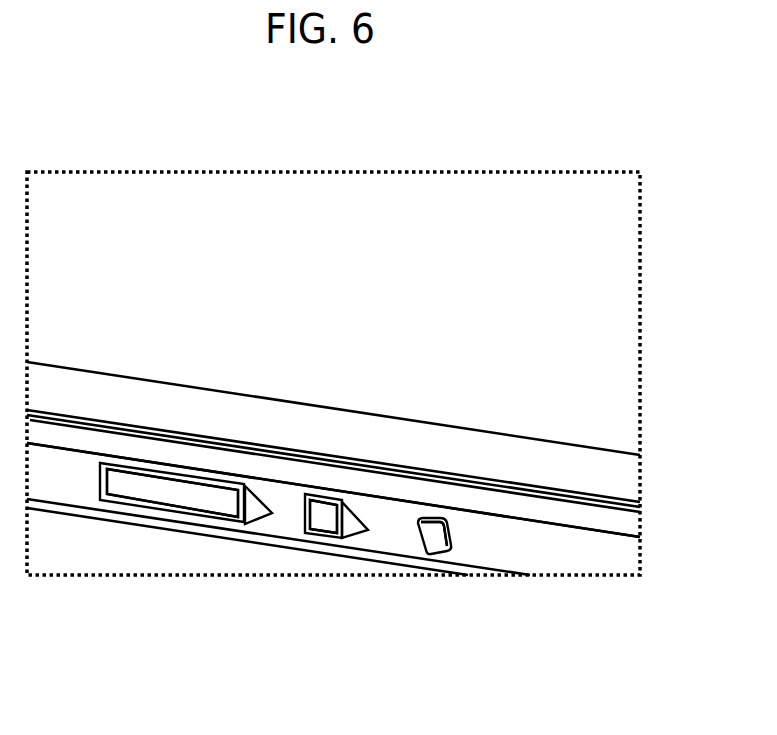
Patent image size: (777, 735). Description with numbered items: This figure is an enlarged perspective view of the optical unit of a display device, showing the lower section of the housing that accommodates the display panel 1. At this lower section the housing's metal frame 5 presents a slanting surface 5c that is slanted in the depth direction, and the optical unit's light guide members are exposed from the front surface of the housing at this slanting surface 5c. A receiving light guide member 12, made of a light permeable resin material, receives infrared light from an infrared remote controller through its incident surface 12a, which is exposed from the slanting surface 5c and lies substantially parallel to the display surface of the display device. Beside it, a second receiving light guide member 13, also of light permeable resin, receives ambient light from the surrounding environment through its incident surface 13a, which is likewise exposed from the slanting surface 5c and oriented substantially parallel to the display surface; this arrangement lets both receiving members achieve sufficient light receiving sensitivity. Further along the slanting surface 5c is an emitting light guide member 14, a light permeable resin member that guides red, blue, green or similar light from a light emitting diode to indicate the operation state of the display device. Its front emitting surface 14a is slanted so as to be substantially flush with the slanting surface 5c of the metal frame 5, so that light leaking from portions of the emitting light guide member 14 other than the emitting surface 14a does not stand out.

The display panel 1 is at (538, 195).
The metal frame 5 is at (532, 568).
The slanting surface 5c is at (535, 537).
The receiving light guide member 12 is at (130, 499).
The incident surface 12a is at (182, 489).
The receiving light guide member 13 is at (350, 525).
The incident surface 13a is at (323, 513).
The emitting light guide member 14 is at (425, 540).
The front emitting surface 14a is at (437, 538).